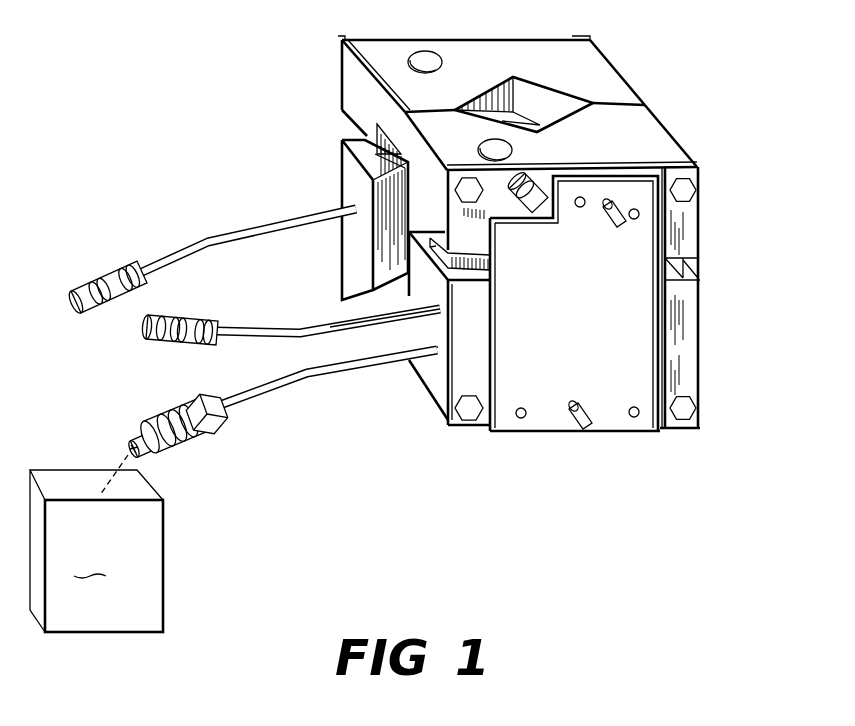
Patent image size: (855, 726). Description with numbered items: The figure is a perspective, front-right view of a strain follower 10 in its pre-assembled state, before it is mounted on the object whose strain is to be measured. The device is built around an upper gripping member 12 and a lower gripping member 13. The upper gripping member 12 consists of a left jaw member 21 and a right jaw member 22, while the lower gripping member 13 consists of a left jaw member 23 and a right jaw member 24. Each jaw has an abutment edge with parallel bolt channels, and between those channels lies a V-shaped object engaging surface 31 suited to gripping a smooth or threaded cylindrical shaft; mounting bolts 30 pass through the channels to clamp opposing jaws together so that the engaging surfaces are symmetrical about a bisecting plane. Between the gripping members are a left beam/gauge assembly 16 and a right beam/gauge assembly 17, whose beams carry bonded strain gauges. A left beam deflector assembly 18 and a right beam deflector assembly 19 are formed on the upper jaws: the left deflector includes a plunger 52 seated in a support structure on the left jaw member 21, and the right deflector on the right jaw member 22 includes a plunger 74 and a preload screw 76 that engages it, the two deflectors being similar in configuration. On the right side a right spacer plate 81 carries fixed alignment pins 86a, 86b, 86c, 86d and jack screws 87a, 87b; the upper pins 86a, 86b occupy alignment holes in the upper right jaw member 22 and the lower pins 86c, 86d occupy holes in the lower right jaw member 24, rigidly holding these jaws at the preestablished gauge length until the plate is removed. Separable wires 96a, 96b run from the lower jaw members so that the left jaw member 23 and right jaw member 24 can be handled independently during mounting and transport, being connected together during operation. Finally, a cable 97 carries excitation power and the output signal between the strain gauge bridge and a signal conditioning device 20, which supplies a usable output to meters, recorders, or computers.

The strain follower 10 is at (665, 42).
The upper gripping member 12 is at (495, 86).
The lower gripping member 13 is at (400, 386).
The left beam/gauge assembly 16 is at (348, 194).
The right beam/gauge assembly 17 is at (694, 330).
The left beam deflector assembly 18 is at (336, 129).
The right beam deflector assembly 19 is at (690, 252).
The signal conditioning device 20 is at (105, 575).
The left jaw member 21 is at (606, 87).
The right jaw member 22 is at (644, 130).
The left jaw member 23 is at (383, 304).
The right jaw member 24 is at (400, 344).
The mounting bolts 30 is at (693, 194).
The object engaging surface 31 is at (525, 95).
The plunger 52 is at (427, 55).
The plunger 74 is at (485, 143).
The preload screw 76 is at (538, 212).
The right spacer plate 81 is at (656, 358).
The alignment pin 86a is at (578, 208).
The alignment pin 86b is at (645, 220).
The alignment pin 86c is at (520, 420).
The alignment pin 86d is at (634, 420).
The jack screw 87a is at (617, 230).
The jack screw 87b is at (585, 430).
The separable wire 96a is at (176, 254).
The separable wire 96b is at (240, 318).
The cable 97 is at (250, 406).